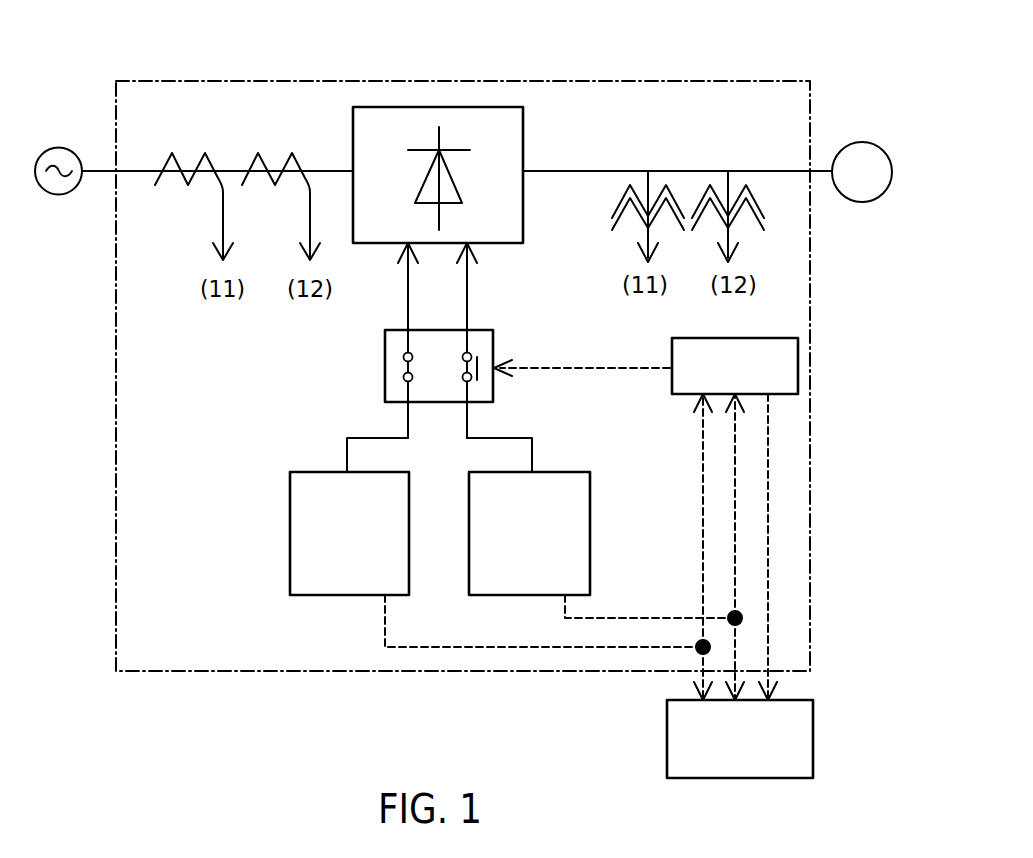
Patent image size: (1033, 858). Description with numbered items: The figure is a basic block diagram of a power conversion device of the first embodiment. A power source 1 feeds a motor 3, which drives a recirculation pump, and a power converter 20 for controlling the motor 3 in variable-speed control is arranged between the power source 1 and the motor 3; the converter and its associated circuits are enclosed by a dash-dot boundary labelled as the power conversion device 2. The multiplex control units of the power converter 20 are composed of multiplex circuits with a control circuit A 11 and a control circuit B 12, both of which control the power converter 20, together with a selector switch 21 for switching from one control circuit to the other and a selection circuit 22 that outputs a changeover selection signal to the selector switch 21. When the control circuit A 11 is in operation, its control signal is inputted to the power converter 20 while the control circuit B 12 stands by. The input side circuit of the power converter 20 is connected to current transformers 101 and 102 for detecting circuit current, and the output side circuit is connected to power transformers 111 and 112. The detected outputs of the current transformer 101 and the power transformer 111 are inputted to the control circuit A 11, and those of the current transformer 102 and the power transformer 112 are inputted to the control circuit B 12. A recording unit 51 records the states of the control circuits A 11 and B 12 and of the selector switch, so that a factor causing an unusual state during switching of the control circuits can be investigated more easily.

The power source 1 is at (63, 147).
The motor drive apparatus 2 is at (682, 80).
The motor 3 is at (857, 143).
The control circuit A 11 is at (290, 552).
The control circuit B 12 is at (590, 563).
The power converter 20 is at (500, 105).
The selector switch 21 is at (493, 347).
The selection circuit 22 is at (672, 391).
The recording unit 51 is at (667, 748).
The current transformer 101 is at (193, 157).
The current transformer 102 is at (280, 157).
The power transformer 111 is at (618, 200).
The power transformer 112 is at (757, 200).